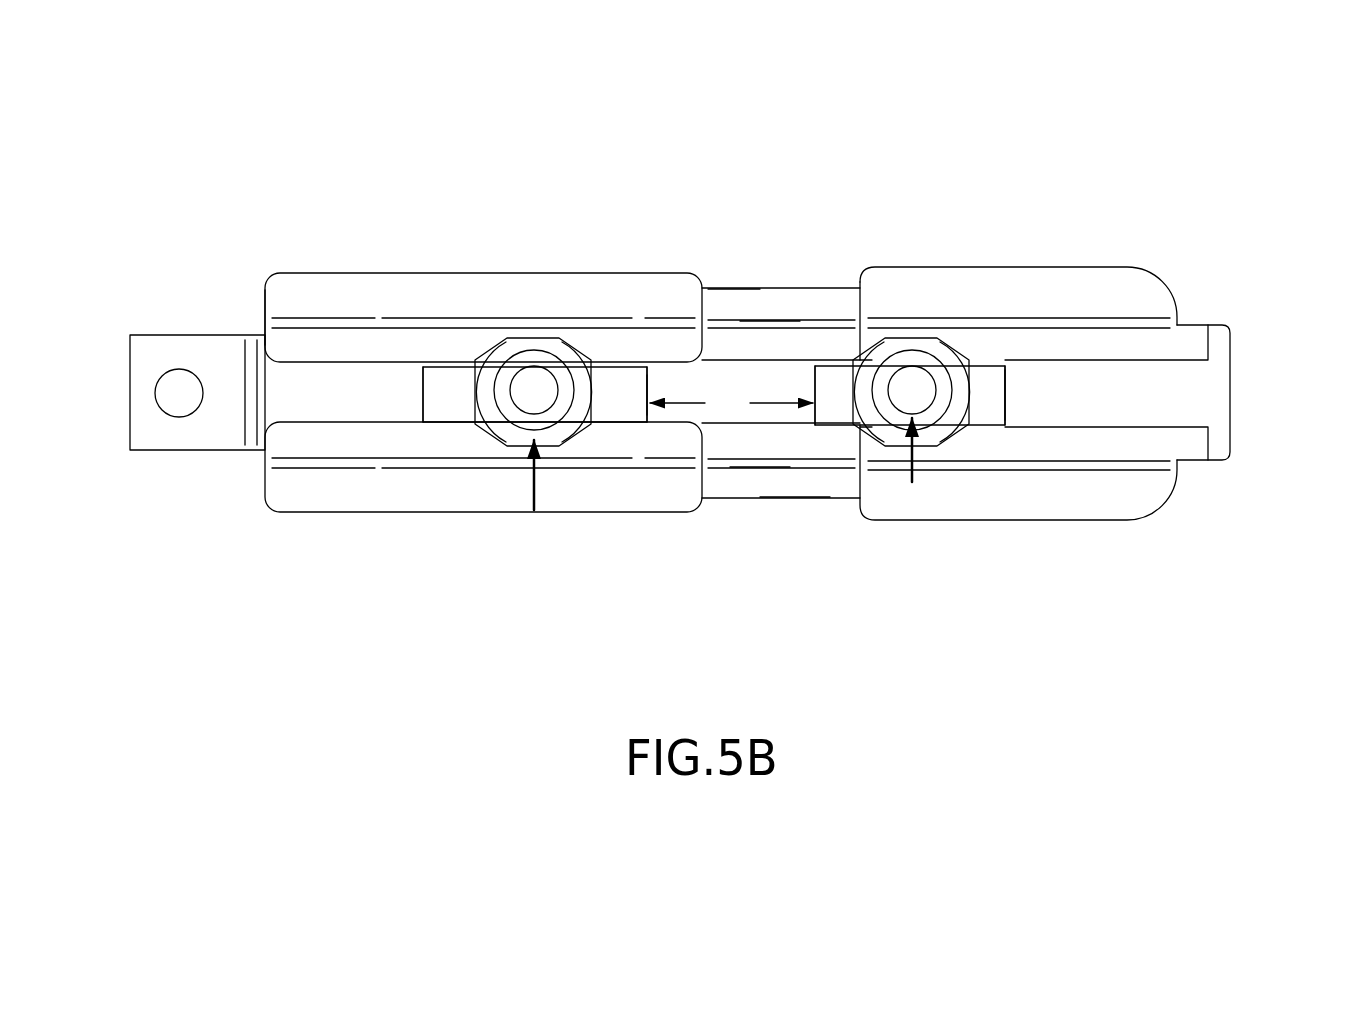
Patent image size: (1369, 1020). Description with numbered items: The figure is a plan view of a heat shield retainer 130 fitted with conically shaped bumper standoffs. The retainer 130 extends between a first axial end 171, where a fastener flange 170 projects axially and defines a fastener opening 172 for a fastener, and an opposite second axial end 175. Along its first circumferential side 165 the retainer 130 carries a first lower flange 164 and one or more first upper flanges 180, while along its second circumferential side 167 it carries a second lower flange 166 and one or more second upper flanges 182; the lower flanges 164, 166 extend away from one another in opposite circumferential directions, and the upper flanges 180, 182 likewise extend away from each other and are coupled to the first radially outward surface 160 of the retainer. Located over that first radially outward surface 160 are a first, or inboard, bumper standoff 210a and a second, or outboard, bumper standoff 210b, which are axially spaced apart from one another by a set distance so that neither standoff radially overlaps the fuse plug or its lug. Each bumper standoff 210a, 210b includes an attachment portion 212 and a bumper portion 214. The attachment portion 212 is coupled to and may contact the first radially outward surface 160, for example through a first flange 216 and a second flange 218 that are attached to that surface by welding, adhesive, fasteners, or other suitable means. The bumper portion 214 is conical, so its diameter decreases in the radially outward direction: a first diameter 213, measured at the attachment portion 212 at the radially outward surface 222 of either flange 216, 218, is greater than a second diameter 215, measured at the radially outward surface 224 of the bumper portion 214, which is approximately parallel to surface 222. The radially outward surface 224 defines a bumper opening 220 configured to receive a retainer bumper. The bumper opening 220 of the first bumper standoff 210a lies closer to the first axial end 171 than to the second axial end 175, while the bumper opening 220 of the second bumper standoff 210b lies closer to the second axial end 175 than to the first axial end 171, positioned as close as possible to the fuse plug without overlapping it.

The heat shield retainer 130 is at (224, 186).
The fastener flange 170 is at (157, 438).
The fastener opening 172 is at (170, 397).
The first axial end 171 is at (265, 303).
The second upper flange 182 is at (353, 277).
The first upper flange 180 is at (320, 495).
The second axial end 175 is at (1230, 378).
The first radially outward surface 160 is at (776, 377).
The second lower flange 166 is at (735, 302).
The second circumferential side 167 is at (768, 323).
The first circumferential side 165 is at (758, 465).
The first lower flange 164 is at (798, 487).
The attachment portion 212 is at (468, 368).
The first flange 216 is at (441, 380).
The second flange 218 is at (627, 373).
The radially outward surface of bumper portion 224 is at (1005, 390).
The radially outward surface of flanges 222 is at (638, 409).
The bumper portion 214 is at (555, 360).
The bumper opening 220 is at (522, 378).
The first diameter 213 is at (534, 340).
The second diameter 215 is at (912, 349).
The first bumper standoff 210a is at (477, 426).
The second bumper standoff 210b is at (915, 428).